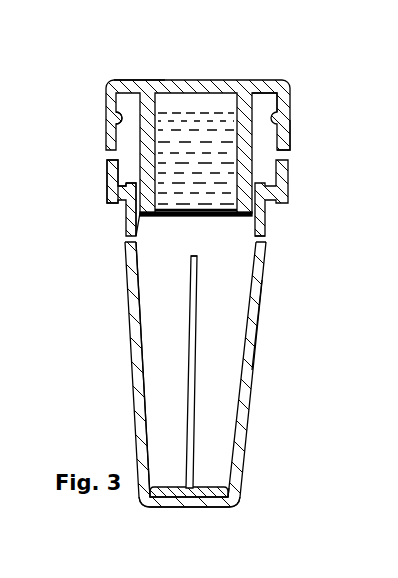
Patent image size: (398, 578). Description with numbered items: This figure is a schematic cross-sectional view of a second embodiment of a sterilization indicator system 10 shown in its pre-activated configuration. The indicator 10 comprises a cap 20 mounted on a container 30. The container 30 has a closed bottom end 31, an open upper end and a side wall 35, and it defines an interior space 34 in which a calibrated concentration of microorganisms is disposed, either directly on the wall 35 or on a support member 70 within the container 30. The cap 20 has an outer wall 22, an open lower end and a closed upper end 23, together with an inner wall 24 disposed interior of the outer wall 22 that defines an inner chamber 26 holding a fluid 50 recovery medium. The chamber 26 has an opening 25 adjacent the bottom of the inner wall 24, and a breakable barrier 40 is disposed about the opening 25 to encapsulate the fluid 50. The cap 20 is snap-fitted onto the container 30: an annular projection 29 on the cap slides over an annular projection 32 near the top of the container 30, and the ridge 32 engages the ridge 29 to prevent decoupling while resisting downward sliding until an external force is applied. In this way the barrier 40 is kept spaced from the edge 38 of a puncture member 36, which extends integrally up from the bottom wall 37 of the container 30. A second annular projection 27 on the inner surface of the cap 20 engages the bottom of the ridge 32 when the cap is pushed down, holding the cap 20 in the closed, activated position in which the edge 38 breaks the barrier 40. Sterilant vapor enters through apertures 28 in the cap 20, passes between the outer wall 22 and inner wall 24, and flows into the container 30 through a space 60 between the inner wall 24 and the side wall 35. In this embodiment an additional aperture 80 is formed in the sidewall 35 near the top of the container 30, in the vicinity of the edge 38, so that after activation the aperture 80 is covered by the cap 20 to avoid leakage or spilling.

The sterilization indicator system 10 is at (302, 68).
The cap 20 is at (293, 120).
The outer wall 22 is at (107, 178).
The upper end 23 is at (143, 80).
The inner wall 24 is at (122, 118).
The opening 25 is at (143, 226).
The inner chamber 26 is at (198, 104).
The second annular projection 27 is at (262, 100).
The apertures 28 is at (293, 152).
The annular projection 29 is at (134, 190).
The container 30 is at (270, 304).
The bottom end 31 is at (213, 504).
The annular projection 32 is at (121, 188).
The interior space 34 is at (166, 297).
The side wall 35 is at (248, 357).
The puncture member 36 is at (198, 410).
The bottom wall 37 is at (233, 489).
The edge 38 is at (196, 254).
The breakable barrier 40 is at (254, 244).
The fluid 50 is at (220, 173).
The space 60 is at (256, 205).
The support member 70 is at (216, 487).
The aperture 80 is at (124, 253).